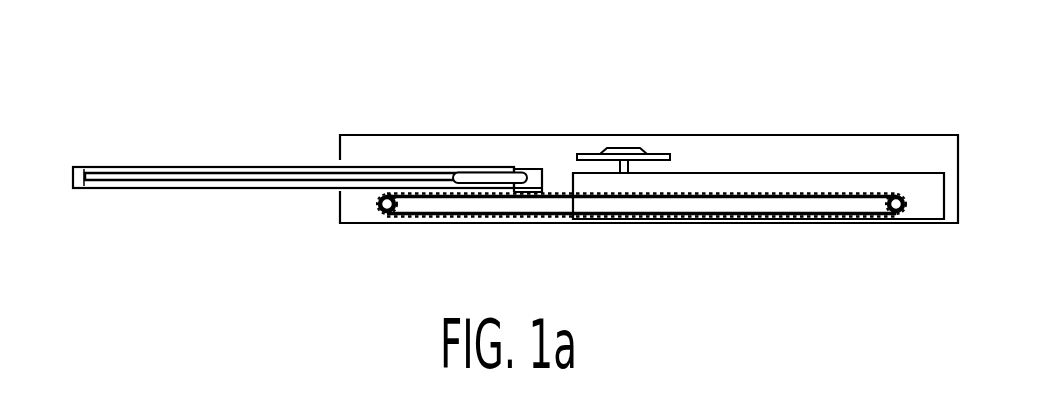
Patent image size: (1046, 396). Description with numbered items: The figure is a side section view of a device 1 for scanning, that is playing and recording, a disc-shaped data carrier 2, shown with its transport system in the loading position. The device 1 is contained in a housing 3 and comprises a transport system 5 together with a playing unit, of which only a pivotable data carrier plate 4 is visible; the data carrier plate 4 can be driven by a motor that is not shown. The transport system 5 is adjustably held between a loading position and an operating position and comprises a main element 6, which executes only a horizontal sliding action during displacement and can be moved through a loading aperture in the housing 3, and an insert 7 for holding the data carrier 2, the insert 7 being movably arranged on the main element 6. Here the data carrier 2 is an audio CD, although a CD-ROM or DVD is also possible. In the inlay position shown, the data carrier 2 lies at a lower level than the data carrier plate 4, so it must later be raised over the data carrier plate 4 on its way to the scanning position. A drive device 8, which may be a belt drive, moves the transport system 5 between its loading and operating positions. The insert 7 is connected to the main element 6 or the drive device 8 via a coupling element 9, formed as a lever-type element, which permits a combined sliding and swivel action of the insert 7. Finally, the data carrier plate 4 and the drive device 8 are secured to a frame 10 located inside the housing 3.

The device 1 is at (780, 93).
The disc-shaped data carrier 2 is at (197, 173).
The housing 3 is at (855, 134).
The data carrier plate 4 is at (597, 152).
The transport system 5 is at (100, 116).
The main element 6 is at (78, 180).
The insert 7 is at (242, 181).
The drive device 8 is at (766, 215).
The coupling element 9 is at (488, 177).
The frame 10 is at (929, 223).